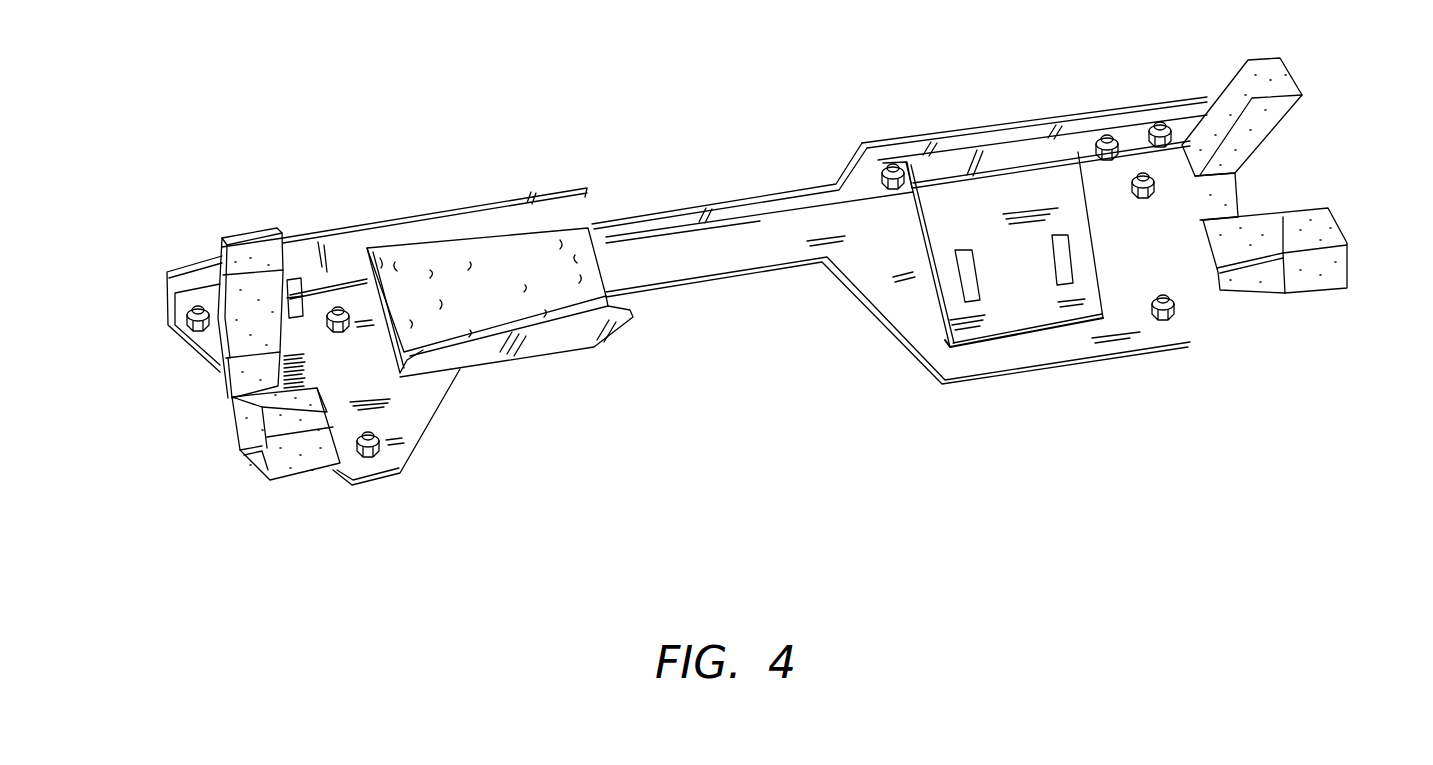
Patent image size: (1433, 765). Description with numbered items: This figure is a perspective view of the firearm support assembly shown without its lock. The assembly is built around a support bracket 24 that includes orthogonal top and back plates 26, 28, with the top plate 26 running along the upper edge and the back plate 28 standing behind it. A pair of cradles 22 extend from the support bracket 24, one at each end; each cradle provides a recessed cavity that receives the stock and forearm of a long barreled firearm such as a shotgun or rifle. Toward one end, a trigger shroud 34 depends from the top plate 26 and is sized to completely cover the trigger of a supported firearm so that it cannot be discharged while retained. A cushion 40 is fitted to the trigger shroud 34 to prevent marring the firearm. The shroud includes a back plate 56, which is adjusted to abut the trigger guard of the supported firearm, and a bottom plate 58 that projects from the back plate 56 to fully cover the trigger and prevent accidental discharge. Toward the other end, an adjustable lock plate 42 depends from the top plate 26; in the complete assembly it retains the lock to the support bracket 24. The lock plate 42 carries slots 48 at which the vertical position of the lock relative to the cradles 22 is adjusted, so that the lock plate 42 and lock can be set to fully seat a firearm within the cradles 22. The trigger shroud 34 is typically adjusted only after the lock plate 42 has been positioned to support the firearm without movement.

The cradles 22 is at (236, 438).
The support bracket 24 is at (855, 149).
The top plate 26 is at (1033, 118).
The back plate 28 is at (426, 419).
The trigger shroud 34 is at (495, 282).
The cushion 40 is at (590, 233).
The lock plate 42 is at (955, 251).
The slots 48 is at (1057, 278).
The back plate of trigger shroud 56 is at (397, 353).
The bottom plate 58 is at (507, 353).